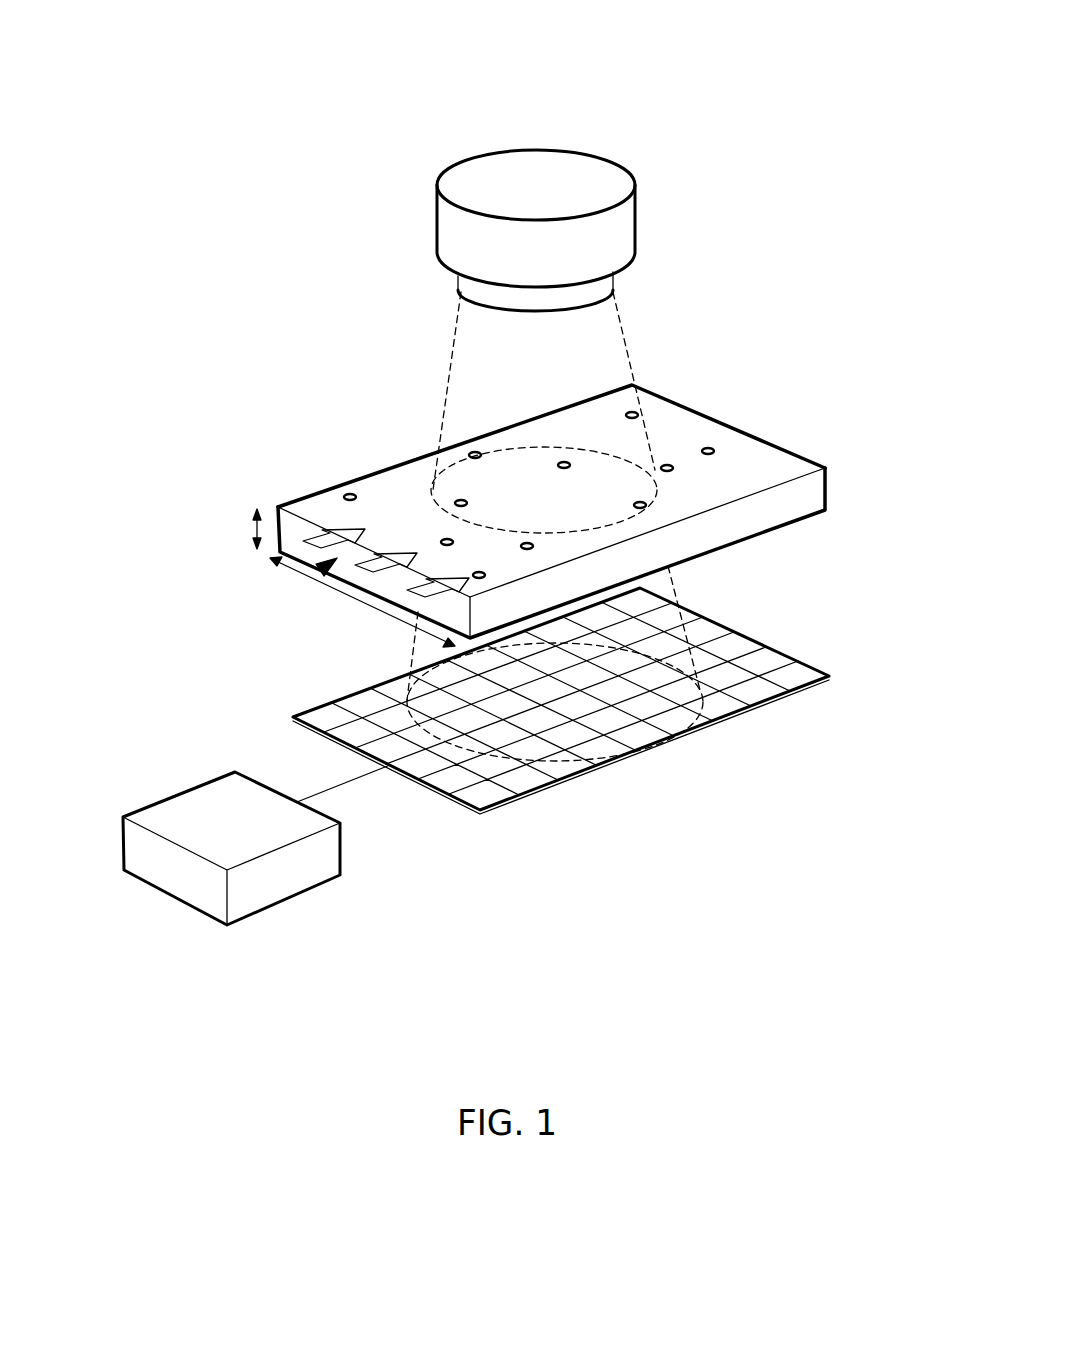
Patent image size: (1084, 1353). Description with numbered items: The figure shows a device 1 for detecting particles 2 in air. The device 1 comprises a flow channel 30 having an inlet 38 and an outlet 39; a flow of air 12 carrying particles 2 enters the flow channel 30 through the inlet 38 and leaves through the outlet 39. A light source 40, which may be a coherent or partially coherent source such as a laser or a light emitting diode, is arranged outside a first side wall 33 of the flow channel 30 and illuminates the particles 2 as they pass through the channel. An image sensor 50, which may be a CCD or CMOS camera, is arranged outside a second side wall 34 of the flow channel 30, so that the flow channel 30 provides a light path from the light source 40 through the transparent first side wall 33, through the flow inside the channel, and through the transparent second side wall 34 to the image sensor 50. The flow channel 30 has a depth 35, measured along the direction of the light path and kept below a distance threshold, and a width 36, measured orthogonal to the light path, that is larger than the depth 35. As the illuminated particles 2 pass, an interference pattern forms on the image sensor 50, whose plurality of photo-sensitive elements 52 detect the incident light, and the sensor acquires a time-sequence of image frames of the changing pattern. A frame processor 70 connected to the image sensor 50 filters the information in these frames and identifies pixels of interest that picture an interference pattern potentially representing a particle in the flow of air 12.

The device 1 is at (778, 117).
The light source 40 is at (582, 172).
The flow channel 30 is at (516, 501).
The particles 2 is at (462, 500).
The flow of air 12 is at (450, 577).
The first side wall 33 is at (683, 455).
The second side wall 34 is at (692, 485).
The outlet 39 is at (795, 422).
The depth 35 is at (252, 527).
The width 36 is at (353, 598).
The inlet 38 is at (320, 570).
The image sensor 50 is at (576, 713).
The photo-sensitive elements 52 is at (757, 740).
The frame processor 70 is at (287, 878).